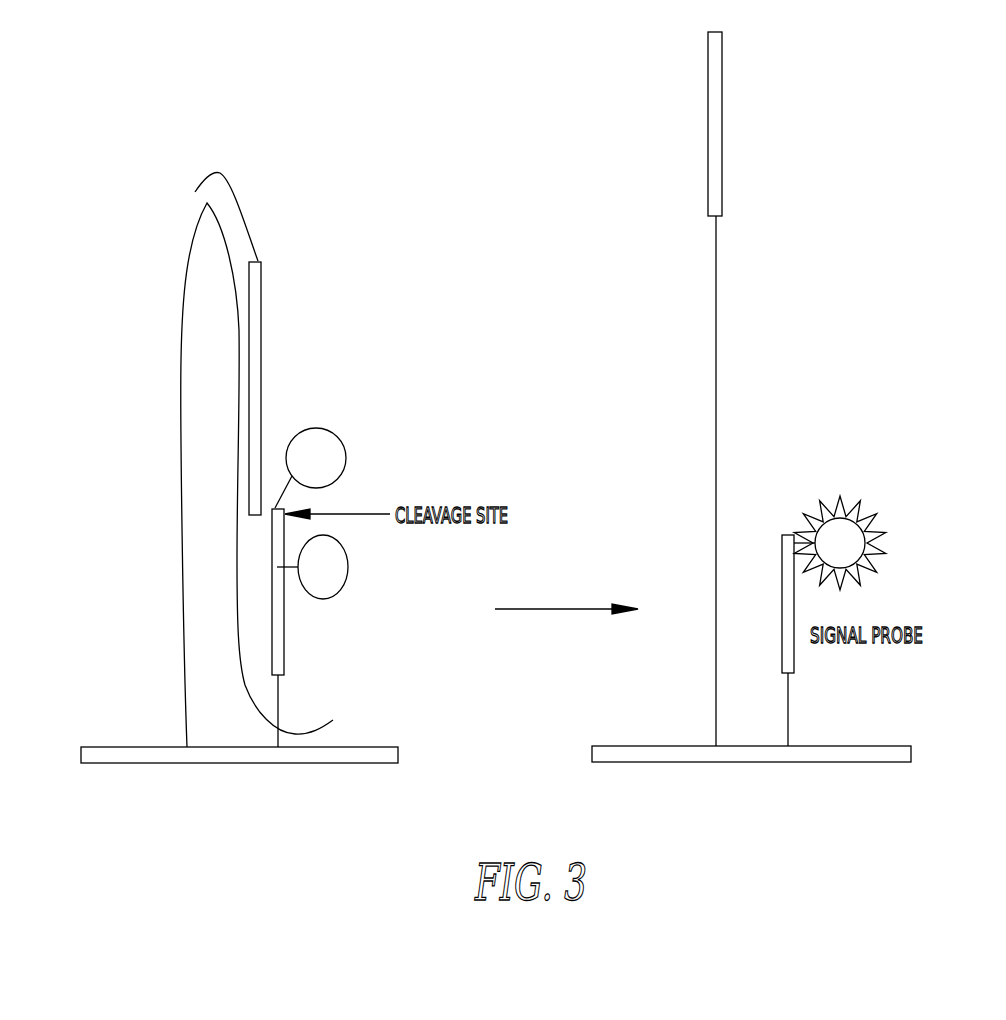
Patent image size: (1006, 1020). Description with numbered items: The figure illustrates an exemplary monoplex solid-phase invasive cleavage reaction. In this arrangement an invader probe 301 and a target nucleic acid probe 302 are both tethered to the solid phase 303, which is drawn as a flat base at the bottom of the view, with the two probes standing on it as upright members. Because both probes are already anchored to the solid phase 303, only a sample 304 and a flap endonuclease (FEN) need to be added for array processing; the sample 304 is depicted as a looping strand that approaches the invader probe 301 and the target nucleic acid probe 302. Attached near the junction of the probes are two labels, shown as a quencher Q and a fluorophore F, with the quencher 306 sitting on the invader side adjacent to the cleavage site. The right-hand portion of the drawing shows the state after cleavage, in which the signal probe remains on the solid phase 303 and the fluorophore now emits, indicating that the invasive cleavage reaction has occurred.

The invader probe 301 is at (263, 272).
The target nucleic acid probe 302 is at (285, 653).
The solid phase 303 is at (177, 764).
The sample 304 is at (225, 177).
The quencher 306 is at (348, 458).